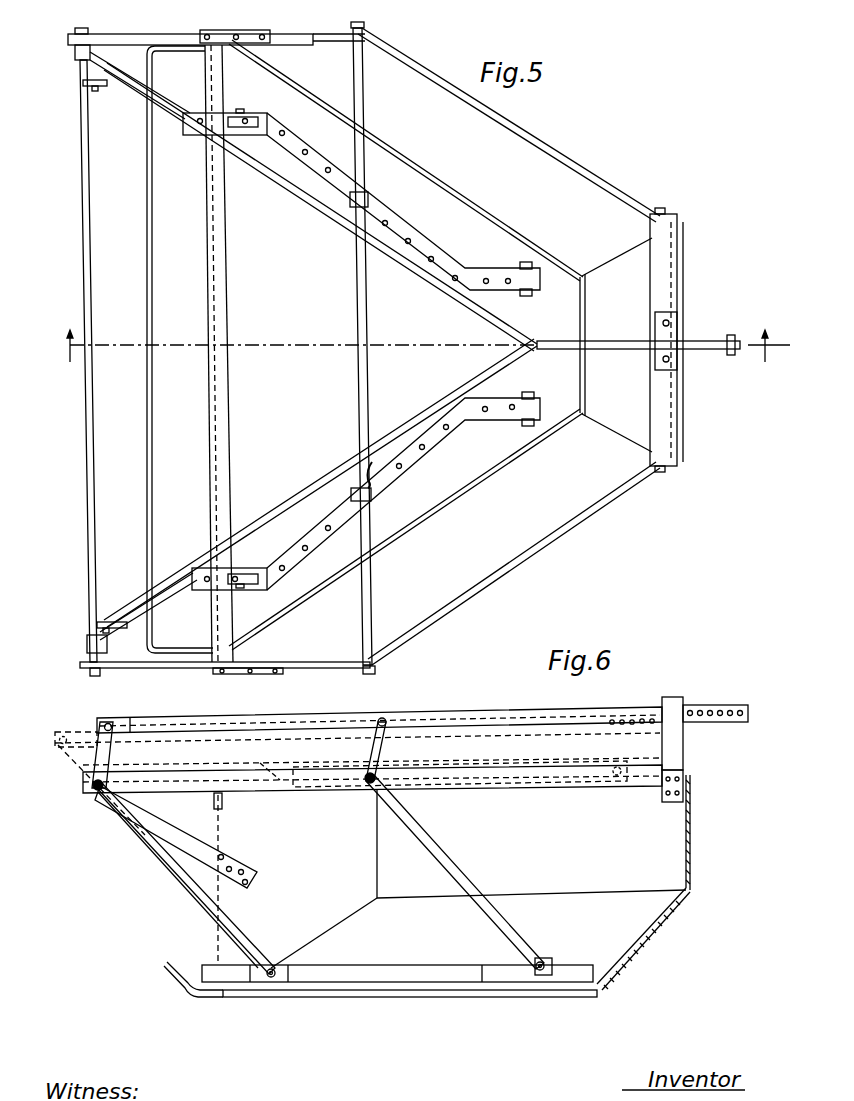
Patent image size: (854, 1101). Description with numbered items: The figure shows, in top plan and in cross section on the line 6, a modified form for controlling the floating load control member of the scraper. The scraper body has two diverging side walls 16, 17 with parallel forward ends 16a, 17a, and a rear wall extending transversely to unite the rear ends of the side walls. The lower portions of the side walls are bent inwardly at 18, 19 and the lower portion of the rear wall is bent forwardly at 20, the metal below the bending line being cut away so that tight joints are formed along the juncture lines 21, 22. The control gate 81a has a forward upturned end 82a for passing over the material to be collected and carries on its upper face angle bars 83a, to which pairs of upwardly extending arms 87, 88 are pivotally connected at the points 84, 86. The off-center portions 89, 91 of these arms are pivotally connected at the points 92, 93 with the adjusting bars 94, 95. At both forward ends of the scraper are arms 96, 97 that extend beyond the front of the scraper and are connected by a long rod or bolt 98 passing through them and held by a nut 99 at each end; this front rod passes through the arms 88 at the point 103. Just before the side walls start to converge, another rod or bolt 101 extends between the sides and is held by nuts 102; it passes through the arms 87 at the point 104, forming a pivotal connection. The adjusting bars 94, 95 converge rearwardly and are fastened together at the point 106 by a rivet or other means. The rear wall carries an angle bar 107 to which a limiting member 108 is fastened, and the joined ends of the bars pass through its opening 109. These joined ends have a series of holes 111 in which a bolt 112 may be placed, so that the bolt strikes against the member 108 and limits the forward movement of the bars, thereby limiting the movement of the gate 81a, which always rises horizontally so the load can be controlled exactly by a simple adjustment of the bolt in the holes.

In FIG. 5, the arm 97 is at (128, 30).
In FIG. 5, the parallel forward end of side wall 16 16a is at (342, 36).
In FIG. 6, the parallel forward end of side wall 16 16a is at (358, 848).
In FIG. 5, the inwardly bent lower portion of side wall 16 18 is at (517, 140).
In FIG. 5, the side wall 16 is at (440, 246).
In FIG. 6, the side wall 16 is at (478, 879).
In FIG. 5, the inwardly bent lower portion of side wall 17 19 is at (528, 545).
In FIG. 5, the side wall 17 is at (486, 588).
In FIG. 5, the juncture line 21 is at (628, 248).
In FIG. 5, the angle bar 107 is at (685, 262).
In FIG. 6, the angle bar 107 is at (686, 778).
In FIG. 5, the opening 109 is at (680, 332).
In FIG. 5, the bolt 112 is at (752, 326).
In FIG. 5, the fastening point 106 is at (548, 342).
In FIG. 5, the section line 6 is at (417, 346).
In FIG. 5, the forwardly bent lower portion of rear wall 20 is at (622, 384).
In FIG. 6, the forwardly bent lower portion of rear wall 20 is at (640, 947).
In FIG. 5, the juncture line 22 is at (636, 436).
In FIG. 5, the long rod or bolt 98 is at (94, 392).
In FIG. 5, the arm 96 is at (153, 666).
In FIG. 5, the adjusting bar 95 is at (330, 212).
In FIG. 5, the adjusting bar 94 is at (310, 500).
In FIG. 6, the adjusting bar 94 is at (461, 714).
In FIG. 5, the pivot point 92 is at (380, 458).
In FIG. 6, the pivot point 92 is at (383, 718).
In FIG. 5, the rod or bolt 101 is at (385, 512).
In FIG. 5, the parallel forward end of side wall 17 17a is at (318, 668).
In FIG. 5, the nut 102 is at (376, 670).
In FIG. 5, the nut 99 is at (98, 672).
In FIG. 6, the pivot point 93 is at (113, 724).
In FIG. 6, the off-center portion of arm 88 91 is at (110, 755).
In FIG. 6, the pivot point 103 is at (97, 794).
In FIG. 6, the upwardly extending arm 88 is at (215, 928).
In FIG. 6, the pivot point 86 is at (272, 967).
In FIG. 6, the off-center portion of arm 87 89 is at (382, 752).
In FIG. 6, the pivot point 104 is at (368, 786).
In FIG. 6, the upwardly extending arm 87 is at (452, 858).
In FIG. 6, the pivot point 84 is at (546, 958).
In FIG. 6, the angle bar 83a is at (379, 968).
In FIG. 6, the forward upturned end 82a is at (179, 979).
In FIG. 6, the control gate 81a is at (285, 998).
In FIG. 6, the limiting member 108 is at (685, 743).
In FIG. 6, the series of holes 111 is at (727, 706).